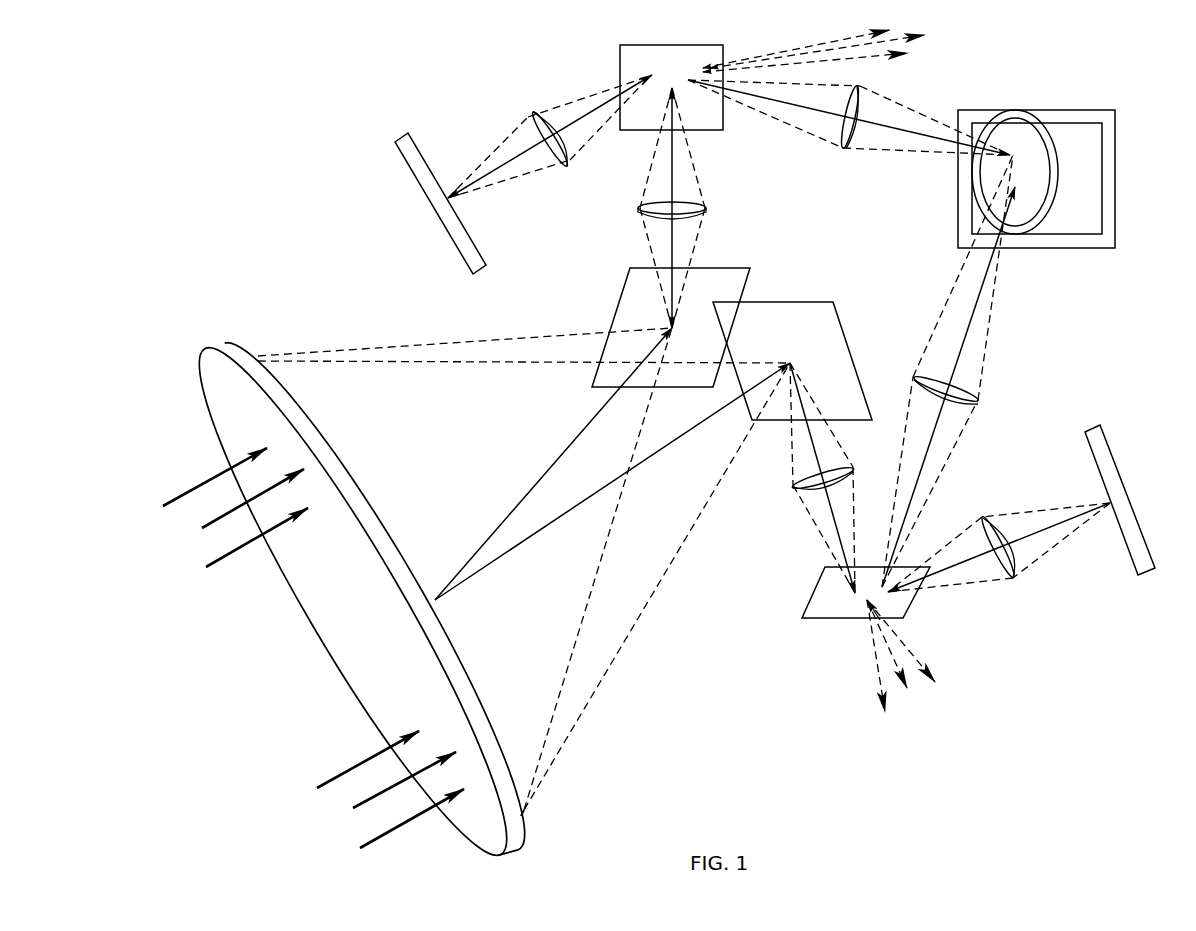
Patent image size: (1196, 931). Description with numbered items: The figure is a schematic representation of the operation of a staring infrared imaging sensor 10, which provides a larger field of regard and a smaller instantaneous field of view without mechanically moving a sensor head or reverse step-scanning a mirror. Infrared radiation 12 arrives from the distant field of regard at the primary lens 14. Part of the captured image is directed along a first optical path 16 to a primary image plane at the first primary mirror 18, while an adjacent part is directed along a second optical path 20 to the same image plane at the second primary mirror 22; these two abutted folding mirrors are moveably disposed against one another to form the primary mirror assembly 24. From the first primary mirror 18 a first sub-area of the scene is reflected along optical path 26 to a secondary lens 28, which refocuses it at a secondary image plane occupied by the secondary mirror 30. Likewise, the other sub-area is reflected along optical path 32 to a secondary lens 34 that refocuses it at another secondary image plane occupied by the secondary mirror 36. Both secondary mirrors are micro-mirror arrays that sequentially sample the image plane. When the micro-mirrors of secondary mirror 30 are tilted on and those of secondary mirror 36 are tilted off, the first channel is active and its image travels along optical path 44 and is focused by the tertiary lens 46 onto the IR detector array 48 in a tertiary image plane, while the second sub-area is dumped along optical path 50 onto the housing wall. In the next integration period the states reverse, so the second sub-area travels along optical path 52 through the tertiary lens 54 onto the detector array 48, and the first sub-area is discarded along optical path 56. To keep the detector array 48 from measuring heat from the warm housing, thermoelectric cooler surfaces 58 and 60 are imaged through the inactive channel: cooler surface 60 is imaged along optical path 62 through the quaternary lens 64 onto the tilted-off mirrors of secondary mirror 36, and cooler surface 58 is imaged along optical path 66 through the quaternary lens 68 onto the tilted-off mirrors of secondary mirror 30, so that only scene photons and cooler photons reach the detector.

The staring infrared imaging sensor 10 is at (365, 195).
The infrared radiation 12 is at (178, 493).
The primary lens 14 is at (320, 653).
The first optical path 16 is at (554, 464).
The first primary mirror 18 is at (735, 267).
The second optical path 20 is at (548, 530).
The second primary mirror 22 is at (805, 301).
The primary mirror assembly 24 is at (607, 290).
The optical path 26 is at (670, 243).
The secondary lens 28 is at (640, 207).
The secondary mirror 30 is at (723, 130).
The optical path 32 is at (817, 450).
The secondary lens 34 is at (792, 487).
The secondary mirror 36 is at (825, 568).
The optical path 44 is at (793, 106).
The tertiary lens 46 is at (843, 149).
The IR detector array 48 is at (1013, 125).
The optical path 50 is at (870, 675).
The optical path 52 is at (930, 447).
The tertiary lens 54 is at (978, 400).
The optical path 56 is at (855, 58).
The thermoelectric cooler surface 58 is at (403, 132).
The thermoelectric cooler surface 60 is at (1095, 425).
The optical path 62 is at (1043, 530).
The quaternary lens 64 is at (1012, 574).
The optical path 66 is at (582, 117).
The quaternary lens 68 is at (532, 108).